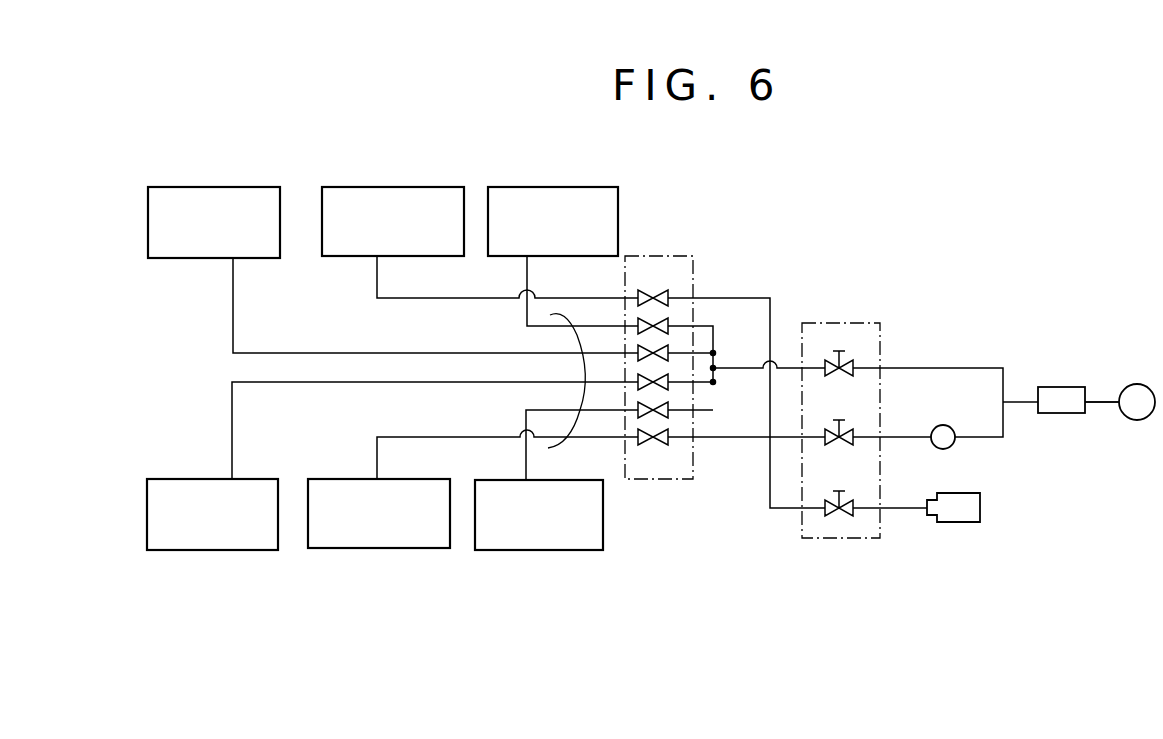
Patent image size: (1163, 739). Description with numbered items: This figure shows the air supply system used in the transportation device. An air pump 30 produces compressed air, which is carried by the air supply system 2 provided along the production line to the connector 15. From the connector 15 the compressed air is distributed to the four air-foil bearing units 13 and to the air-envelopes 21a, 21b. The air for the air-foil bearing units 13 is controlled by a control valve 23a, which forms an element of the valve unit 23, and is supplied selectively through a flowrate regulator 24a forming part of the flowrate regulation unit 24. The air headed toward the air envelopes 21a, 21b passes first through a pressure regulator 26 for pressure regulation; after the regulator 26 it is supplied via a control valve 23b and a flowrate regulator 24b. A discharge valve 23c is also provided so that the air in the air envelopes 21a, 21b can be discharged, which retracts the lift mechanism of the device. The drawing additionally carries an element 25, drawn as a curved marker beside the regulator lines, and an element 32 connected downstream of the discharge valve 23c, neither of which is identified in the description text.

The air-foil bearing unit 13 is at (200, 187).
The air-envelope 21a is at (372, 173).
The air-envelope 21b is at (373, 548).
The flowrate regulation unit 24 is at (675, 256).
The flowrate regulator 24a is at (668, 320).
The flowrate regulator 24b is at (667, 291).
The pipe 25 is at (582, 418).
The valve unit 23 is at (853, 323).
The control valve 23a is at (850, 365).
The control valve 23b is at (850, 434).
The discharge valve 23c is at (850, 504).
The pressure regulator 26 is at (955, 446).
The vacuum source 32 is at (962, 522).
The connector 15 is at (1065, 413).
The air supply system 2 is at (1100, 403).
The air pump 30 is at (1125, 385).